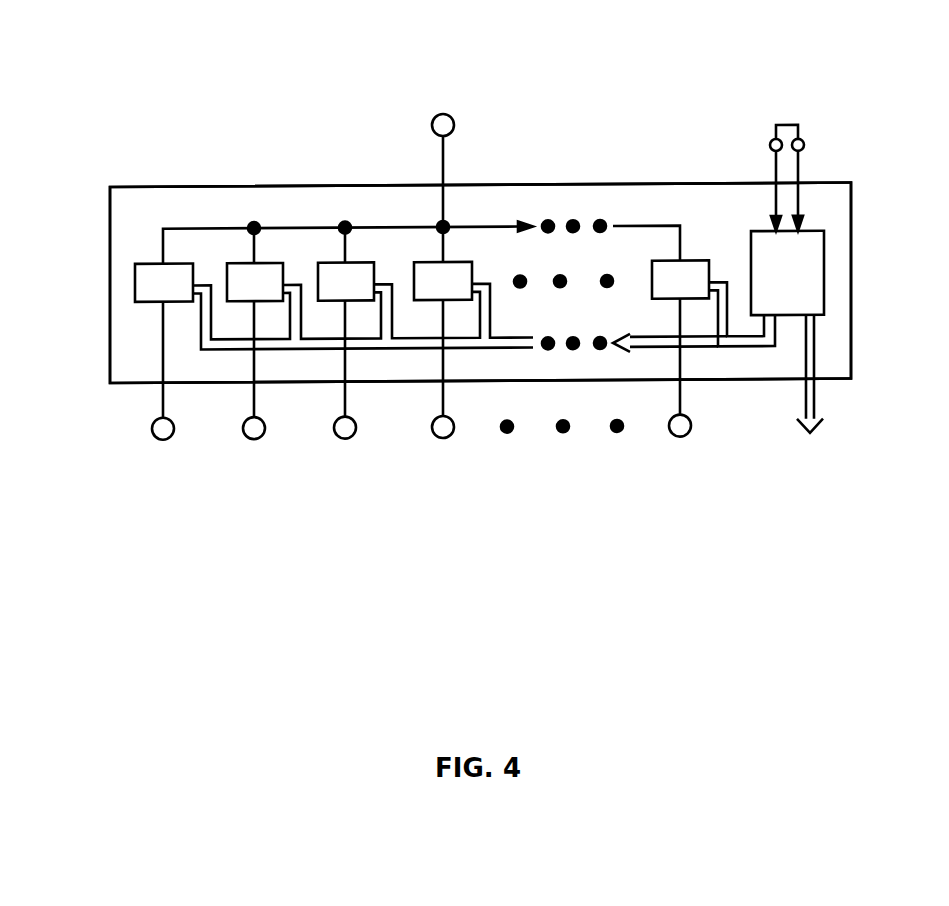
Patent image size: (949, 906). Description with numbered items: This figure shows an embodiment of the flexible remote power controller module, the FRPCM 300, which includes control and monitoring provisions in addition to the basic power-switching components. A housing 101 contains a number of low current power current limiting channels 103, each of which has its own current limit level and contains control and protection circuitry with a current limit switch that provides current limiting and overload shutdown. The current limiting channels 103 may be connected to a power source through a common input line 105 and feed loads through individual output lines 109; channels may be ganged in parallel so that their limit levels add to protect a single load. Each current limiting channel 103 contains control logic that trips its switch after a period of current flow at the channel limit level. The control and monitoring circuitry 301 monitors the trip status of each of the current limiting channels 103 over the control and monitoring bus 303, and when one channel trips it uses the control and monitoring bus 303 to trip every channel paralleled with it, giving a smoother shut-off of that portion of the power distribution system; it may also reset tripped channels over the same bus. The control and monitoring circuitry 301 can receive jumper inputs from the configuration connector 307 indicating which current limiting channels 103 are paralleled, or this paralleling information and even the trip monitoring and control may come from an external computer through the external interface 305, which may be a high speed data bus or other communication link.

The flexible remote power controller module 300 is at (480, 230).
The housing 101 is at (480, 261).
The current limiting channel 103 is at (122, 290).
The input line 105 is at (445, 161).
The output line 109 is at (133, 412).
The control and monitoring circuitry 301 is at (824, 272).
The control and monitoring bus 303 is at (460, 355).
The external interface 305 is at (817, 404).
The configuration connector 307 is at (812, 154).